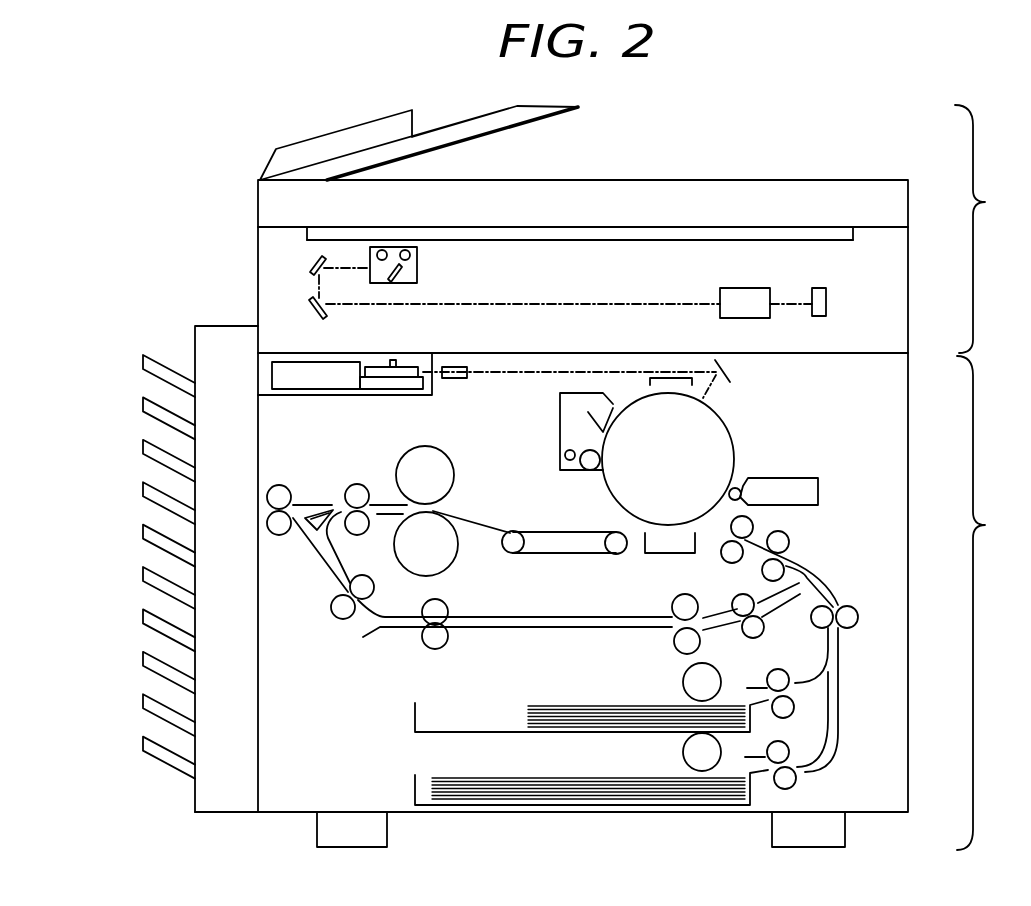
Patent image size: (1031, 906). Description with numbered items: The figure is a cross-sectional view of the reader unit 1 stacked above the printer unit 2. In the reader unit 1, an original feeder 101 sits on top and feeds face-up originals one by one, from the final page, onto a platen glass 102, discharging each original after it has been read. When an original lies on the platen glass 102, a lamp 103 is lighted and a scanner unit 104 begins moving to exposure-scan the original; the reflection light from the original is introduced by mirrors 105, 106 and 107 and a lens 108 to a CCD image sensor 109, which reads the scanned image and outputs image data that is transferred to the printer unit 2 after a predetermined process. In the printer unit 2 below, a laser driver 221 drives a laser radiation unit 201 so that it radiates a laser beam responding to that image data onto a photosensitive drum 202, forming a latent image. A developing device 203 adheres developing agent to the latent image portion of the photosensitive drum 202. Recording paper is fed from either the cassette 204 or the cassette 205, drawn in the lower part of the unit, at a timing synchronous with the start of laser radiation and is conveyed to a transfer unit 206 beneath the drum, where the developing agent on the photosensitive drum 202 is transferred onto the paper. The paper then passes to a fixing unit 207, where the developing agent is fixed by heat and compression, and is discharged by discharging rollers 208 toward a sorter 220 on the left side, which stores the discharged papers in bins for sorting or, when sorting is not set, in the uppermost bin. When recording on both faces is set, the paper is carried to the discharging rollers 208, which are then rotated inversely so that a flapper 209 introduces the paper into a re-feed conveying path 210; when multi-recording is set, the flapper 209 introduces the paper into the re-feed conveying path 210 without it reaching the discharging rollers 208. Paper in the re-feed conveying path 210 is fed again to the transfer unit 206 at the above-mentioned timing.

The reader unit 1 is at (982, 229).
The printer unit 2 is at (983, 603).
The original feeder 101 is at (293, 143).
The platen glass 102 is at (653, 233).
The lamp 103 is at (415, 260).
The scanner unit 104 is at (417, 278).
The mirror 105 is at (404, 282).
The mirror 106 is at (312, 265).
The mirror 107 is at (314, 311).
The lens 108 is at (745, 293).
The CCD image sensor 109 is at (822, 290).
The laser radiation unit 201 is at (378, 366).
The photosensitive drum 202 is at (647, 417).
The developing device 203 is at (793, 483).
The cassette 204 is at (768, 729).
The cassette 205 is at (780, 803).
The transfer unit 206 is at (668, 538).
The fixing unit 207 is at (445, 460).
The discharging rollers 208 is at (283, 525).
The flapper 209 is at (317, 531).
The re-feed conveying path 210 is at (573, 628).
The sorter 220 is at (203, 793).
The laser driver 221 is at (307, 390).